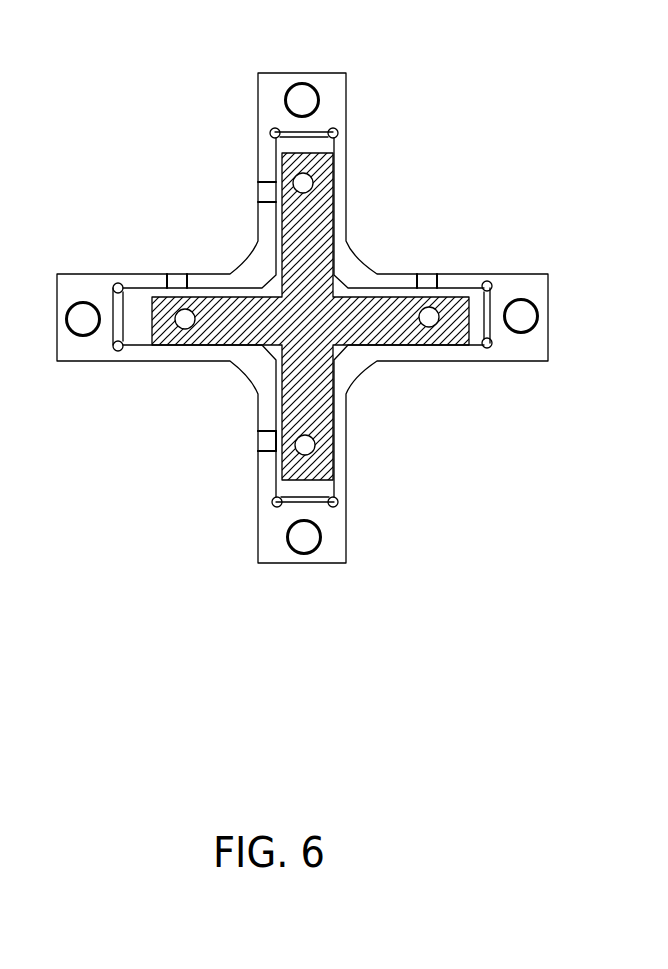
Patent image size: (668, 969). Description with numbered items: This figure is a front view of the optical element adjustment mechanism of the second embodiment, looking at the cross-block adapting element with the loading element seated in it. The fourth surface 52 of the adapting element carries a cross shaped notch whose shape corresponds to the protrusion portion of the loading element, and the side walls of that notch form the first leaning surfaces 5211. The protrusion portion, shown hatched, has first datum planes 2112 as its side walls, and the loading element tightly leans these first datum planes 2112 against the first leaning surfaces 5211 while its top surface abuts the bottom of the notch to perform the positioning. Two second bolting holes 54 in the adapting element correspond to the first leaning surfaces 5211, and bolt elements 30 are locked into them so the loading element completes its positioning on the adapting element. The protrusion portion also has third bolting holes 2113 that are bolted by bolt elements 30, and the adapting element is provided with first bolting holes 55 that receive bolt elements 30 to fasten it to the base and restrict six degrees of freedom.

The fourth surface 52 is at (332, 93).
The first bolting hole 55 is at (532, 302).
The first datum plane 2112 is at (463, 345).
The first leaning surface 5211 is at (430, 346).
The third bolting hole 2113 is at (303, 183).
The bolt element 30 is at (270, 441).
The second bolting hole 54 is at (270, 453).